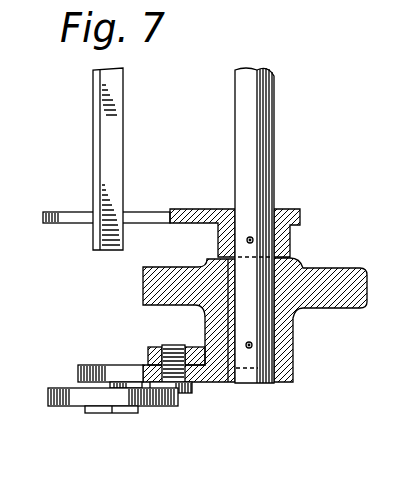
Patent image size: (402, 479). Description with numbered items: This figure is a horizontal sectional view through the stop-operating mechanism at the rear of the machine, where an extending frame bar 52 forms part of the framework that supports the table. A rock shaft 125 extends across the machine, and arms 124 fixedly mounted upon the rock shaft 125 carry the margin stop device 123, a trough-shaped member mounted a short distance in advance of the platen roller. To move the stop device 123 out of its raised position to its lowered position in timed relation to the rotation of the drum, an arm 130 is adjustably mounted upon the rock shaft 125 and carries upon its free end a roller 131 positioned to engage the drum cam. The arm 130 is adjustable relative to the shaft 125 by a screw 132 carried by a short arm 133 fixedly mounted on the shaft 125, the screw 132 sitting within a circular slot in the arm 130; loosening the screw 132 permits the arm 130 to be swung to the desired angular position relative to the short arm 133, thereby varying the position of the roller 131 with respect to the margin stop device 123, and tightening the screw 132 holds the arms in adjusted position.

The frame bar 52 is at (328, 268).
The margin stop device 123 is at (107, 131).
The arm 124 is at (156, 216).
The rock shaft 125 is at (246, 117).
The arm 130 is at (92, 365).
The roller 131 is at (73, 398).
The screw 132 is at (177, 333).
The short arm 133 is at (150, 355).